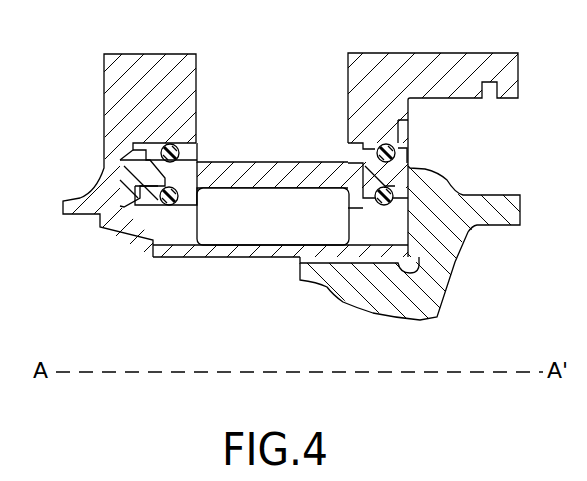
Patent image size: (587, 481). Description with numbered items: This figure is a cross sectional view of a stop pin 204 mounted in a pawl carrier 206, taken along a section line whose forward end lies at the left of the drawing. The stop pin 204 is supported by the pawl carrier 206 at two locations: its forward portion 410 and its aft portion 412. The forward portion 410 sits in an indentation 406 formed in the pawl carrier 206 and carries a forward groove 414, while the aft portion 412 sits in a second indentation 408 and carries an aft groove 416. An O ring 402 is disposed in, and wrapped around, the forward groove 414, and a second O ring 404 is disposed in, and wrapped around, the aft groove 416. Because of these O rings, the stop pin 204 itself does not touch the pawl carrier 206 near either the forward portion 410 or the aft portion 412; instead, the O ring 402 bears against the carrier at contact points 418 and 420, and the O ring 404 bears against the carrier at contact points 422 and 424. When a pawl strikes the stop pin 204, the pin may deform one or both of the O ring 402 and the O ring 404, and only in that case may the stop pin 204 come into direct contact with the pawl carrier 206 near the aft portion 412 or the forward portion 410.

The stop pin 204 is at (287, 183).
The pawl carrier 206 is at (108, 92).
The O ring 402 is at (127, 167).
The O ring 404 is at (404, 153).
The indentation 406 is at (200, 152).
The indentation 408 is at (353, 156).
The forward portion 410 is at (148, 206).
The aft portion 412 is at (390, 181).
The forward groove 414 is at (186, 165).
The aft groove 416 is at (400, 150).
The contact point 418 is at (164, 148).
The contact point 420 is at (155, 202).
The contact point 422 is at (384, 206).
The contact point 424 is at (389, 146).